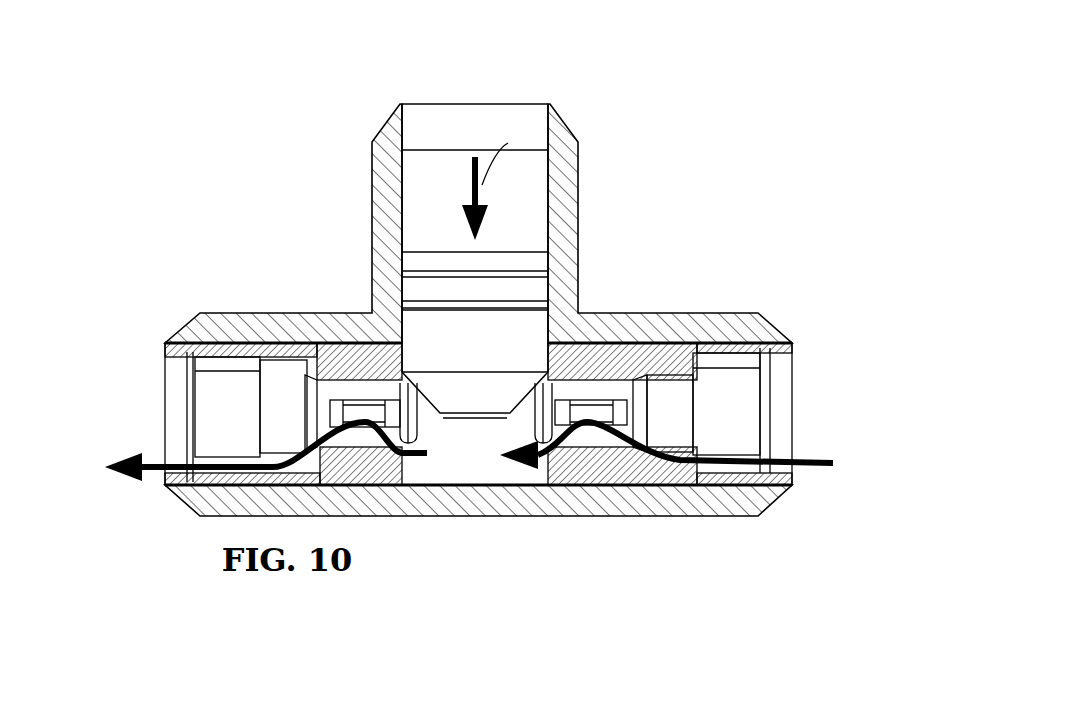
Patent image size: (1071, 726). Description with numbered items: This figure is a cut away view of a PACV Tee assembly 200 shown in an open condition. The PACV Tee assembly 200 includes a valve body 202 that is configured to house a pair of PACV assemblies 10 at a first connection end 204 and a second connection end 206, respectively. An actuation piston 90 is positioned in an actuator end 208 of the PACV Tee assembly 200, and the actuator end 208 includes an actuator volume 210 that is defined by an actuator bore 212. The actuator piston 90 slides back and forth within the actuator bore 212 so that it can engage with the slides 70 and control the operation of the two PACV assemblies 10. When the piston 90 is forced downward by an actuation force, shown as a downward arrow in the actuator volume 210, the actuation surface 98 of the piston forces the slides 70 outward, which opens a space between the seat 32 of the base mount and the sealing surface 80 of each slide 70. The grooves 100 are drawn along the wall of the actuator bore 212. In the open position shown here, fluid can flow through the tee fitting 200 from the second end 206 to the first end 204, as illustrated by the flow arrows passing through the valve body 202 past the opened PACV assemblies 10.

The PACV Tee assembly 200 is at (628, 102).
The valve body 202 is at (560, 513).
The first connection end 204 is at (165, 442).
The second connection end 206 is at (785, 437).
The actuator end 208 is at (388, 122).
The actuator volume 210 is at (513, 200).
The actuator bore 212 is at (403, 200).
The grooves 100 is at (560, 310).
The actuation piston 90 is at (427, 322).
The actuation surface 98 is at (450, 395).
The slides 70 is at (402, 378).
The sealing surface 80 is at (287, 342).
The PACV assemblies 10 is at (317, 343).
The seat 32 is at (335, 380).